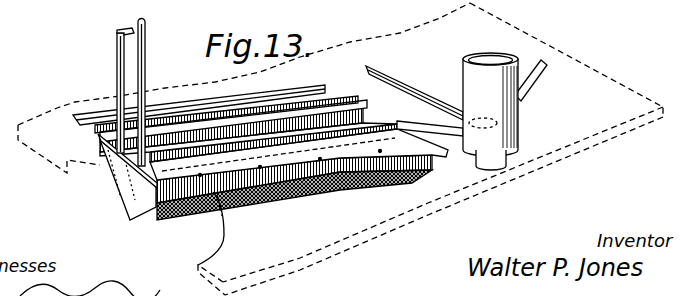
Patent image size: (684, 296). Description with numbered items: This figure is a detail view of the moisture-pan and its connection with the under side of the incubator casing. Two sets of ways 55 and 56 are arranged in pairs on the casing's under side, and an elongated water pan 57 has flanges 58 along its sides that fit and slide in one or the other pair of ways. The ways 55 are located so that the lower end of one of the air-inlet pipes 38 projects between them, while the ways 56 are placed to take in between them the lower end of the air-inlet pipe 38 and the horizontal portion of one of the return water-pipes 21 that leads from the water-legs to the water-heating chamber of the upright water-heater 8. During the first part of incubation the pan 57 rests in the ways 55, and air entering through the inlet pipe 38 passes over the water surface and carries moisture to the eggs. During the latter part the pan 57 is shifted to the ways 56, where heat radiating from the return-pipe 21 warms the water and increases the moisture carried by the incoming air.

The water-heater 8 is at (482, 89).
The return-pipe 21 is at (146, 62).
The air-inlet pipe 38 is at (116, 75).
The ways 55 is at (97, 137).
The ways 56 is at (182, 138).
The pan 57 is at (128, 197).
The flanges 58 is at (103, 138).